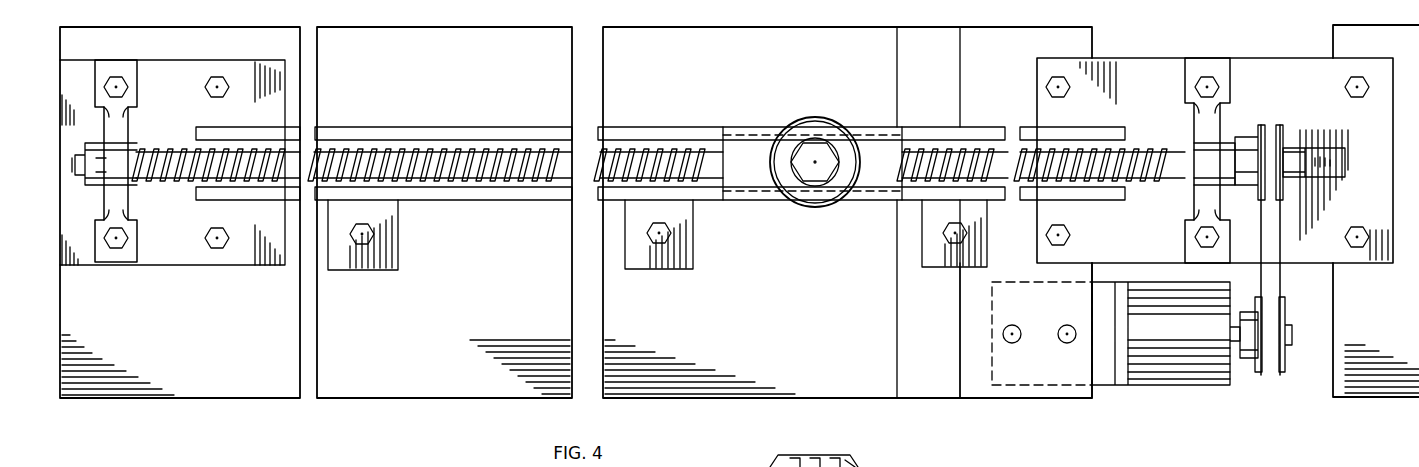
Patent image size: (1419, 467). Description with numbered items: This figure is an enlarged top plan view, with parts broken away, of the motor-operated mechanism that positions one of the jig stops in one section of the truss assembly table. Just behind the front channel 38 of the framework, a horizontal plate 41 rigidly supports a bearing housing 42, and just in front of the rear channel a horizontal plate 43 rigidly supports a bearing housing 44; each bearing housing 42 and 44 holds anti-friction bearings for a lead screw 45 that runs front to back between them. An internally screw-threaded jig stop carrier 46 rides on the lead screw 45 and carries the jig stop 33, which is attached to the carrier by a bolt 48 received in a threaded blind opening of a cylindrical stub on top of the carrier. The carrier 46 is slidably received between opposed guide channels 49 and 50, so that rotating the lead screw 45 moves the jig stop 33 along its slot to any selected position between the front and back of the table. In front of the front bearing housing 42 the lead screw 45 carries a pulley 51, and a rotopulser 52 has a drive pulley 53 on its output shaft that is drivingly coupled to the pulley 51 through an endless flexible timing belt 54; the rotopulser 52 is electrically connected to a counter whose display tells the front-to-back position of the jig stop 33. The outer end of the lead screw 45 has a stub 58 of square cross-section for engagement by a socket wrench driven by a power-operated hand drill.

The jig stop 33 is at (815, 126).
The front channel 38 is at (1363, 333).
The horizontal plate 41 is at (1134, 76).
The bearing housing 42 is at (1200, 135).
The horizontal plate 43 is at (182, 250).
The bearing housing 44 is at (120, 139).
The lead screw 45 is at (934, 160).
The jig stop carrier 46 is at (752, 173).
The bolt 48 is at (812, 160).
The guide channel 49 is at (496, 195).
The guide channel 50 is at (437, 133).
The pulley 51 is at (1283, 135).
The rotopulser 52 is at (1206, 386).
The drive pulley 53 is at (1280, 362).
The endless flexible timing belt 54 is at (1272, 288).
The stub 58 is at (1322, 158).